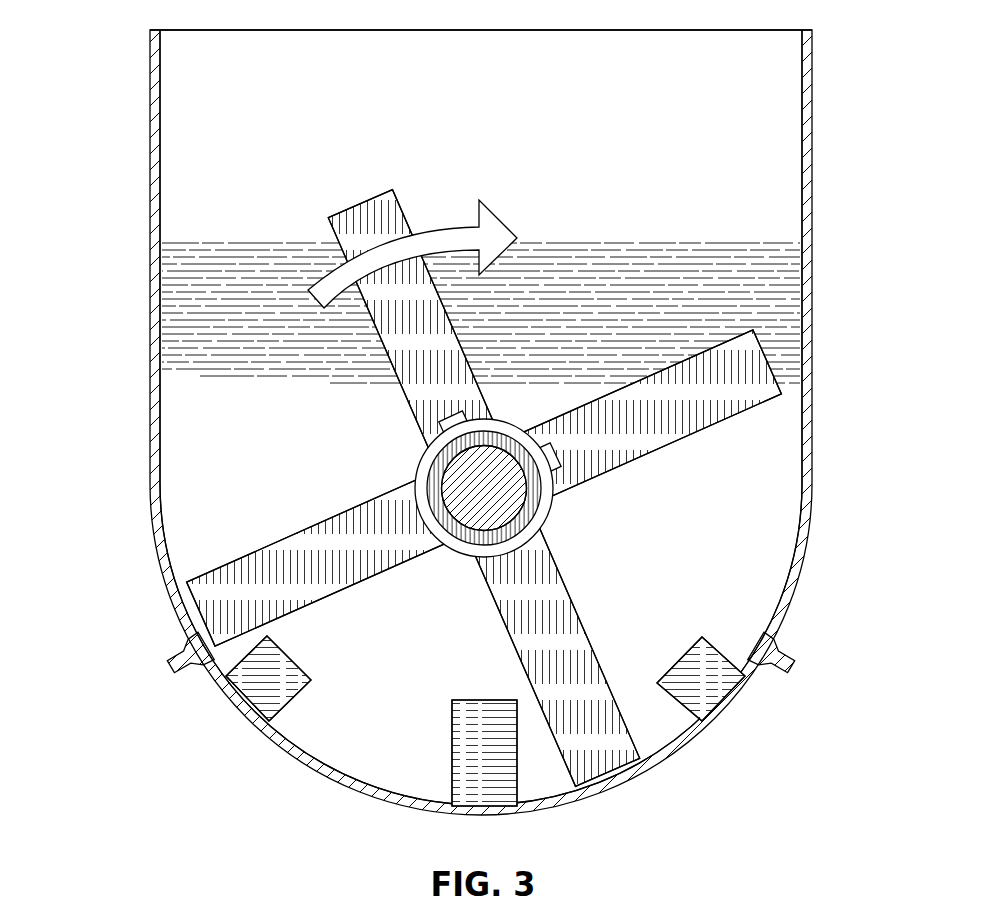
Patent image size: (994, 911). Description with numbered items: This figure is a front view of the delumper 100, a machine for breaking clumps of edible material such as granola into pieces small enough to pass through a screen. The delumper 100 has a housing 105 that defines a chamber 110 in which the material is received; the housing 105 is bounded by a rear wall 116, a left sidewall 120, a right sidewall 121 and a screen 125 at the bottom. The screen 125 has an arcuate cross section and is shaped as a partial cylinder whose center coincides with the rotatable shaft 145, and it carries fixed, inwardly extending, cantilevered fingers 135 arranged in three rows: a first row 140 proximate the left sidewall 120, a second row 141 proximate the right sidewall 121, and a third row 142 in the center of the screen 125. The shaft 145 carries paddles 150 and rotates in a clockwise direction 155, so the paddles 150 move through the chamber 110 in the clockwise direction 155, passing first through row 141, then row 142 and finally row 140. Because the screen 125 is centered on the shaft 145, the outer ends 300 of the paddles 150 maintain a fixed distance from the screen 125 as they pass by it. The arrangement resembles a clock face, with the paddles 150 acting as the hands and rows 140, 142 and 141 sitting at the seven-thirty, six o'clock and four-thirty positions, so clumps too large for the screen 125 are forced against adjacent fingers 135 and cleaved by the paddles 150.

The delumper 100 is at (470, 421).
The housing 105 is at (482, 431).
The chamber 110 is at (167, 380).
The rear wall 116 is at (763, 52).
The left sidewall 120 is at (150, 478).
The right sidewall 121 is at (808, 478).
The screen 125 is at (303, 763).
The fingers 135 is at (483, 708).
The first row 140 is at (255, 689).
The second row 141 is at (710, 688).
The third row 142 is at (494, 793).
The rotatable shaft 145 is at (437, 472).
The paddles 150 is at (455, 375).
The clockwise direction 155 is at (452, 222).
The outer ends 300 is at (182, 612).